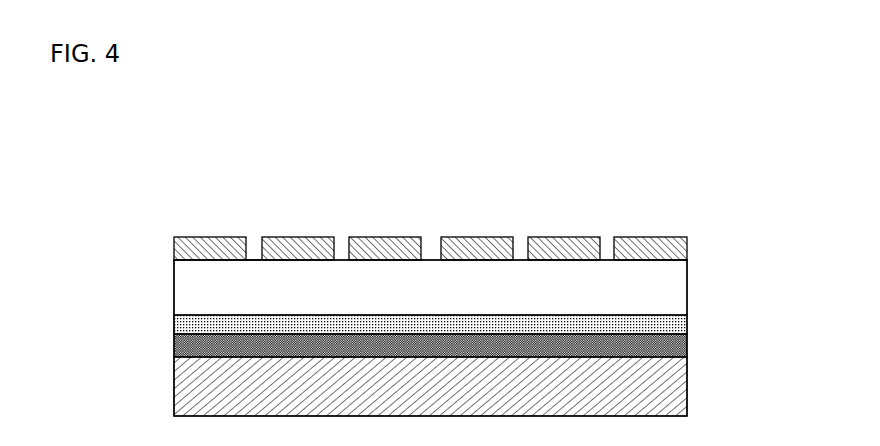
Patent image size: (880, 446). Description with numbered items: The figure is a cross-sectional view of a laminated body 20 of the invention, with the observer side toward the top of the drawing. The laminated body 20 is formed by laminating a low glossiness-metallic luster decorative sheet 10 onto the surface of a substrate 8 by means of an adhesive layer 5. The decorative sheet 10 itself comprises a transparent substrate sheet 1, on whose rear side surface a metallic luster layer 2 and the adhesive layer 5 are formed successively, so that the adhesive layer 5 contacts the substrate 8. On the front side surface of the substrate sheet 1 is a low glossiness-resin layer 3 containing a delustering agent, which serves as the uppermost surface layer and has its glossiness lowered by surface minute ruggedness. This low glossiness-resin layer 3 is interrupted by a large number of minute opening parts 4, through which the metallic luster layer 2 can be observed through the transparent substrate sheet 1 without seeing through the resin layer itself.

The substrate sheet 1 is at (663, 282).
The metallic luster layer 2 is at (663, 320).
The low glossiness-resin layer 3 is at (664, 244).
The minute opening parts 4 is at (255, 256).
The adhesive layer 5 is at (663, 346).
The substrate 8 is at (663, 392).
The low glossiness-metallic luster decorative sheet 10 is at (788, 230).
The laminated body 20 is at (593, 198).